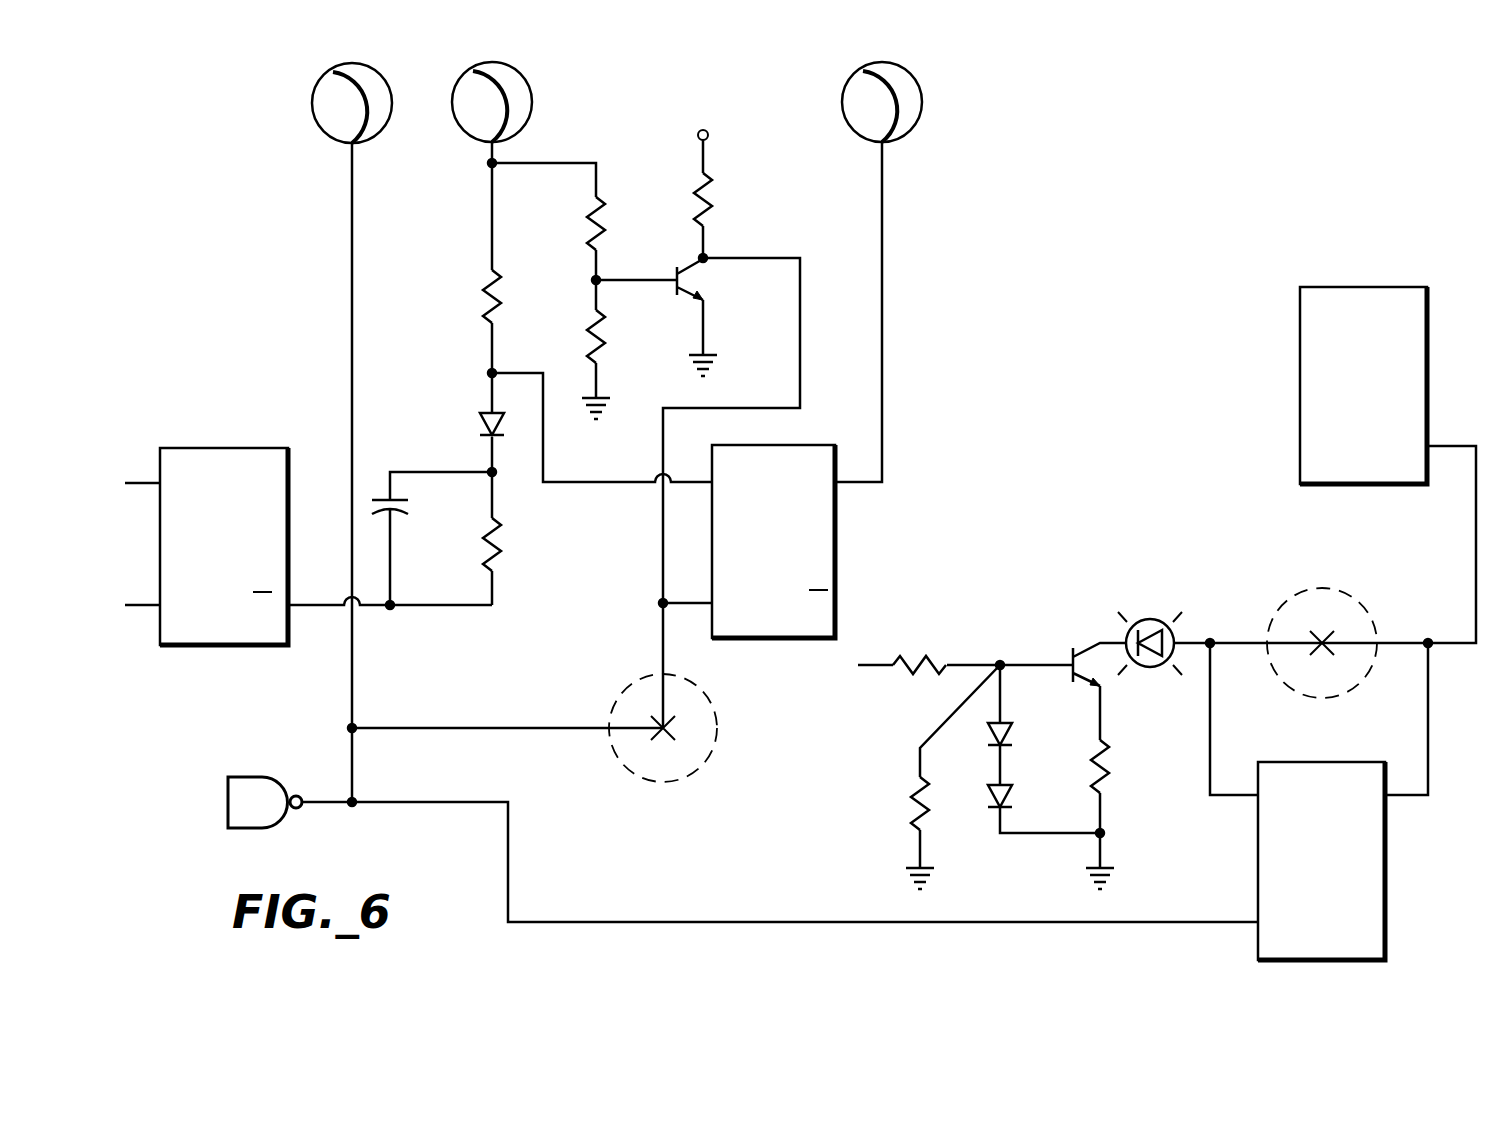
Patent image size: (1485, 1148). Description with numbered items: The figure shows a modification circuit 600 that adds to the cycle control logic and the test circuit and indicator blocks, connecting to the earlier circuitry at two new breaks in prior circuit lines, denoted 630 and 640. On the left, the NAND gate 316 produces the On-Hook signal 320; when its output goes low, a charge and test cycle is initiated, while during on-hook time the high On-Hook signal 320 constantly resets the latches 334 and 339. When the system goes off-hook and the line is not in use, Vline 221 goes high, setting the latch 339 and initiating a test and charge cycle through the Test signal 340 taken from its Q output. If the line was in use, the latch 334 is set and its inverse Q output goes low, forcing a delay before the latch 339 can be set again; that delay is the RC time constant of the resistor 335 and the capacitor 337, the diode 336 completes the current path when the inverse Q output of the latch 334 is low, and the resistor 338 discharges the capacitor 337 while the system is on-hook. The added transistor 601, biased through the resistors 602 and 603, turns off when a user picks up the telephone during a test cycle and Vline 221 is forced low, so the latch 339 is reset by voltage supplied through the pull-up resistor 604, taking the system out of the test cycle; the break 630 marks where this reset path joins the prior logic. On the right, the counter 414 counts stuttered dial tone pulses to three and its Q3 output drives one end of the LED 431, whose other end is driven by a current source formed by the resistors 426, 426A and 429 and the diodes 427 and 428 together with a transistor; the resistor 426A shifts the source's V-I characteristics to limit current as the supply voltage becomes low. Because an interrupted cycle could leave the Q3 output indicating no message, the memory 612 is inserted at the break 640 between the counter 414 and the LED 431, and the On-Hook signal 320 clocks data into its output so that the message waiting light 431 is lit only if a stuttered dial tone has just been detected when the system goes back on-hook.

The modification circuit 600 is at (1304, 80).
The On-Hook signal 320 is at (380, 76).
The Vline 221 is at (527, 78).
The Test signal 340 is at (912, 74).
The pull-up resistor 604 is at (712, 207).
The resistor 602 is at (604, 235).
The resistor 603 is at (606, 345).
The transistor 601 is at (672, 286).
The resistor 335 is at (503, 293).
The diode 336 is at (480, 425).
The capacitor 337 is at (377, 497).
The resistor 338 is at (503, 549).
The latch 334 is at (222, 448).
The latch 339 is at (770, 445).
The break in prior circuit line 630 is at (716, 712).
The NAND gate 316 is at (248, 777).
The resistor 426 is at (915, 672).
The resistor 426A is at (934, 805).
The diode 427 is at (1010, 740).
The diode 428 is at (1012, 800).
The resistor 429 is at (1090, 778).
The LED 431 is at (1160, 618).
The break in prior circuit line 640 is at (1315, 590).
The counter 414 is at (1358, 287).
The memory 612 is at (1318, 762).